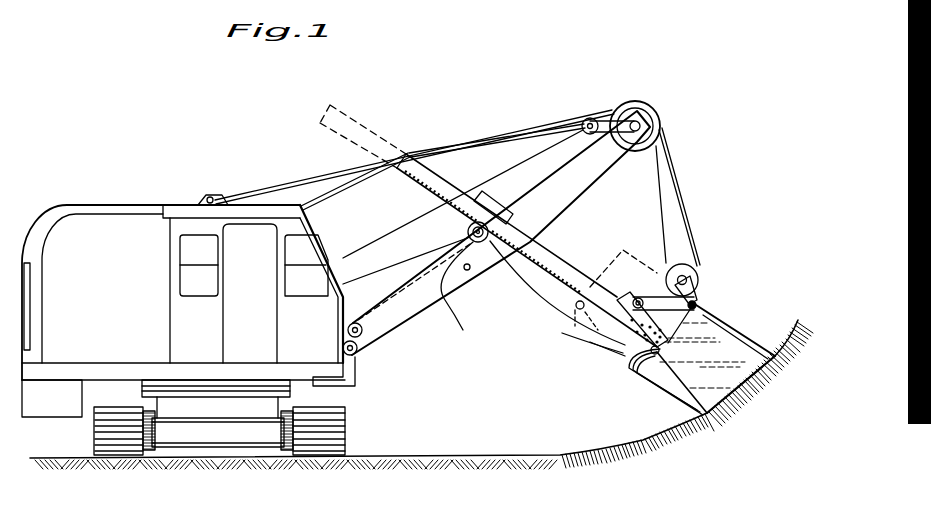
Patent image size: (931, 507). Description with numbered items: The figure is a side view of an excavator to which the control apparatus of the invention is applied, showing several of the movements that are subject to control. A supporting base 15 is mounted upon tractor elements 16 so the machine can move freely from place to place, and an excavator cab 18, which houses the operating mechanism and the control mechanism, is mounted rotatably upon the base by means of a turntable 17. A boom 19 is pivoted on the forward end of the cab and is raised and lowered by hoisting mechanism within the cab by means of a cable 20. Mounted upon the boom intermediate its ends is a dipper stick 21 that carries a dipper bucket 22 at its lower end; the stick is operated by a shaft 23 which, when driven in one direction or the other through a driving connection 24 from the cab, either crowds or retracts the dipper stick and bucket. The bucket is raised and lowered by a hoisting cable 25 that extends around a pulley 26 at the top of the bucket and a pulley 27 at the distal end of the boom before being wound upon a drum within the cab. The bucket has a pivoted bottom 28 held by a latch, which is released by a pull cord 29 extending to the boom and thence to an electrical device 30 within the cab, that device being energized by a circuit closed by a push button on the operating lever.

The supporting base 15 is at (208, 412).
The tractor elements 16 is at (113, 450).
The turntable 17 is at (216, 399).
The excavator cab 18 is at (178, 385).
The boom 19 is at (433, 303).
The cable 20 is at (531, 171).
The dipper stick 21 is at (548, 262).
The dipper bucket 22 is at (687, 373).
The shaft 23 is at (476, 243).
The driving connection 24 is at (405, 285).
The hoisting cable 25 is at (367, 190).
The pulley 26 is at (688, 267).
The pulley 27 is at (648, 104).
The pivoted bottom 28 is at (640, 378).
The pull cord 29 is at (550, 313).
The electrical device 30 is at (337, 335).